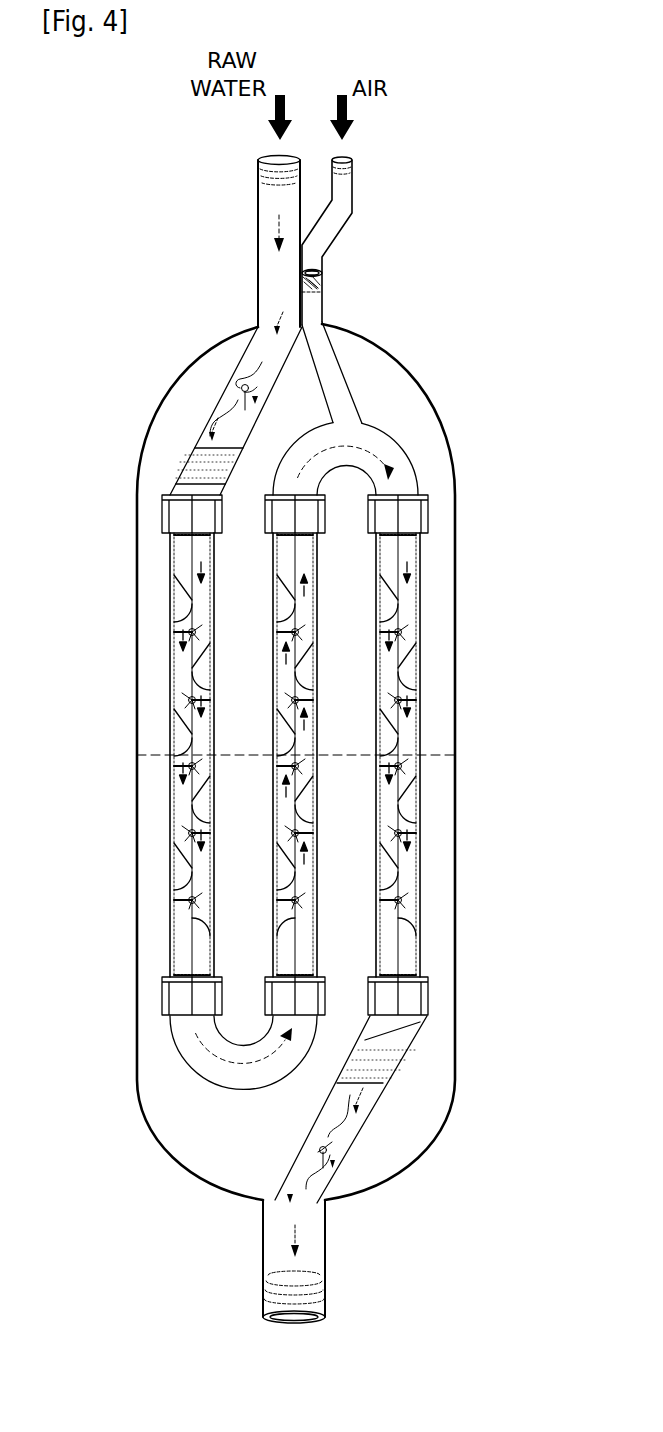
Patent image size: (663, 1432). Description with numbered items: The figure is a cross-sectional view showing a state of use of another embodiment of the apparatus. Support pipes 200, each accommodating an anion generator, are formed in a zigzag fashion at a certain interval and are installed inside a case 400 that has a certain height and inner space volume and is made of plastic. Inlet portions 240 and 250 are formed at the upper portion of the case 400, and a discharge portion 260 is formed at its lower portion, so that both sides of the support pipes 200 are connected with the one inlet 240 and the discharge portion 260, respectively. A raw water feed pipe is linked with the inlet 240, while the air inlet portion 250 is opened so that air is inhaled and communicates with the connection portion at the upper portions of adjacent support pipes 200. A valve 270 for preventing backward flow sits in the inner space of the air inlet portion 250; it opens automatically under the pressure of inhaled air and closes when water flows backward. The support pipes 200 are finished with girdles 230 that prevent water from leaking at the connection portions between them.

The support pipe 200 is at (176, 598).
The girdle 230 is at (170, 517).
The inlet portion 240 is at (258, 162).
The air inlet portion 250 is at (353, 162).
The discharge portion 260 is at (298, 1320).
The valve 270 is at (323, 282).
The case 400 is at (162, 395).